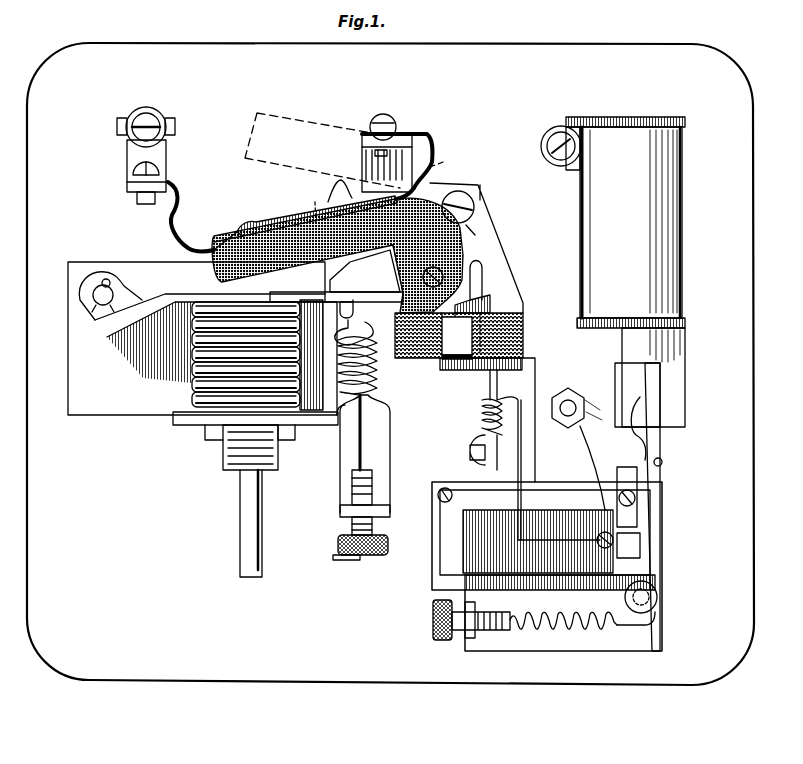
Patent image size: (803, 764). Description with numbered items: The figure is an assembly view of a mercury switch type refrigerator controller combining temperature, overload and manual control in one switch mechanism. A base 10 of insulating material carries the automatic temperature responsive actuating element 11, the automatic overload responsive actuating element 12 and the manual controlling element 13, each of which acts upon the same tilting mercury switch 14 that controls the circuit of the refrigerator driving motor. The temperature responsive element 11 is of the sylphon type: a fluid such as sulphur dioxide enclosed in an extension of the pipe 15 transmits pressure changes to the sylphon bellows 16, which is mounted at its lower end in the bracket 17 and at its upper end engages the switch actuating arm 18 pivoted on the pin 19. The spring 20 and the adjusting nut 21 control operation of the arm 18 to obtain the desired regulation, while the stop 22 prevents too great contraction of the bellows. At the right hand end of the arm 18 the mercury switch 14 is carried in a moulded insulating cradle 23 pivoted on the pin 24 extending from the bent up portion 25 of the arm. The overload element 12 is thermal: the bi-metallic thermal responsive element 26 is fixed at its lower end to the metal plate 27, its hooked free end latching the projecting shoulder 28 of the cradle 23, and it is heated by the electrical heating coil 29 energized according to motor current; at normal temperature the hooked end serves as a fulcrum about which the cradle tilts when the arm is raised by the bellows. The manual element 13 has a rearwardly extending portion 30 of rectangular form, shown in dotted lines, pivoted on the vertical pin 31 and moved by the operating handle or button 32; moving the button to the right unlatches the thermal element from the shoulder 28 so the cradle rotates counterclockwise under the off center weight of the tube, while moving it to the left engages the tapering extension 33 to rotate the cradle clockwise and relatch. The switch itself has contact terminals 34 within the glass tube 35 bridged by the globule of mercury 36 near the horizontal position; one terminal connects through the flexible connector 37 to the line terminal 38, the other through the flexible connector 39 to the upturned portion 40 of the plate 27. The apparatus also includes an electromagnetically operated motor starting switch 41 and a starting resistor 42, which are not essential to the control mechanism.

The base 10 is at (190, 670).
The temperature responsive actuating element 11 is at (222, 468).
The overload responsive actuating element 12 is at (497, 380).
The manual controlling element 13 is at (527, 318).
The tilting mercury switch 14 is at (291, 216).
The pipe 15 is at (245, 553).
The sylphon bellows 16 is at (192, 393).
The bracket 17 is at (192, 418).
The switch actuating arm 18 is at (187, 295).
The pin 19 is at (112, 294).
The spring 20 is at (372, 372).
The adjusting nut 21 is at (340, 540).
The stop 22 is at (305, 403).
The cradle 23 is at (457, 252).
The pin 24 is at (445, 270).
The bent up portion 25 is at (336, 276).
The bi-metallic thermal responsive element 26 is at (482, 292).
The metal plate 27 is at (535, 452).
The projecting shoulder 28 is at (474, 274).
The electrical heating coil 29 is at (483, 420).
The rearwardly extending portion 30 is at (505, 306).
The vertical pin 31 is at (466, 308).
The operating handle or button 32 is at (463, 363).
The tapering extension 33 is at (400, 330).
The contact terminals 34 is at (332, 199).
The glass tube 35 is at (262, 222).
The globule of mercury 36 is at (237, 238).
The flexible connector 37 is at (180, 240).
The line terminal 38 is at (120, 126).
The flexible connector 39 is at (435, 138).
The upturned portion 40 is at (364, 146).
The electromagnetically operated motor starting switch 41 is at (660, 440).
The starting resistor 42 is at (613, 272).